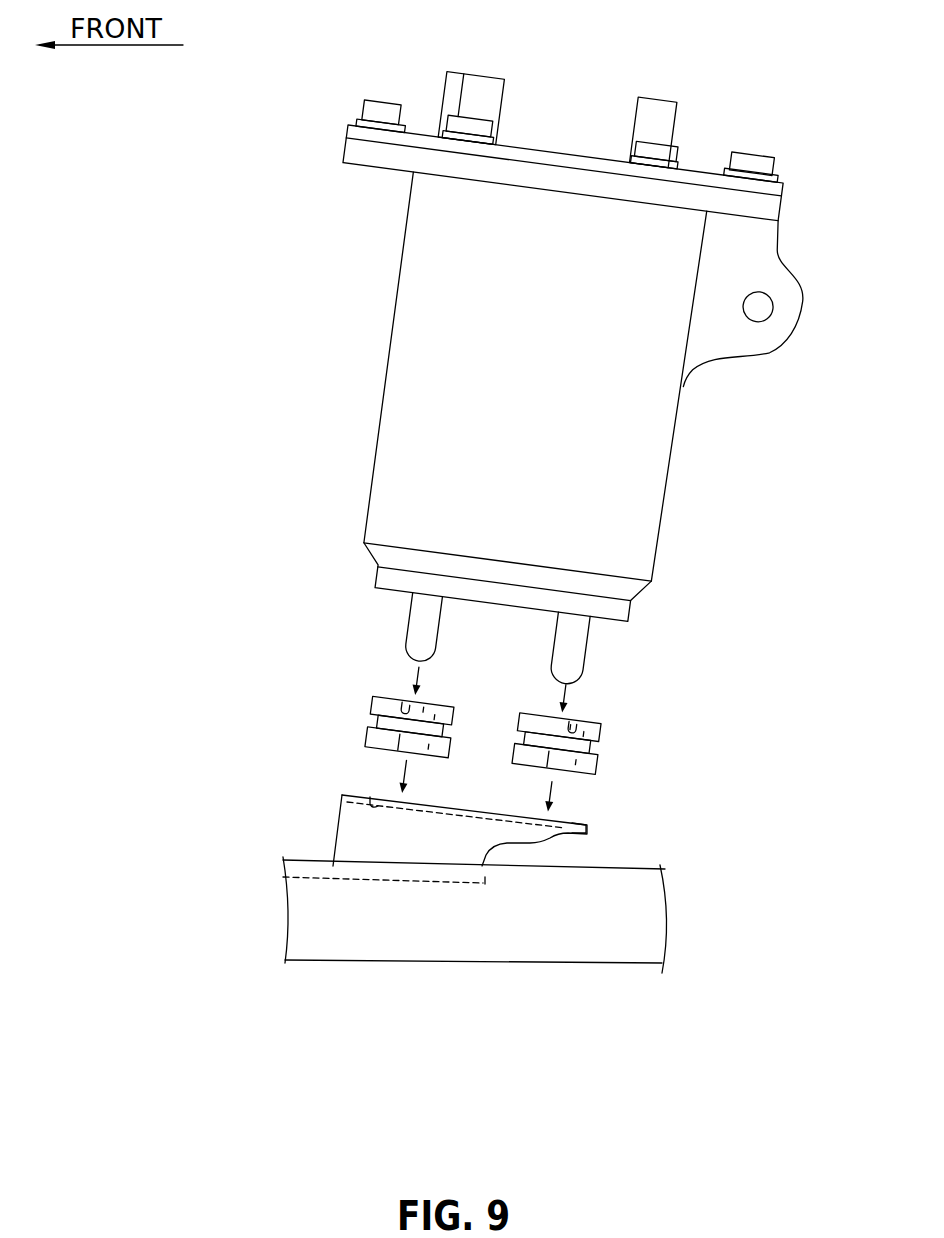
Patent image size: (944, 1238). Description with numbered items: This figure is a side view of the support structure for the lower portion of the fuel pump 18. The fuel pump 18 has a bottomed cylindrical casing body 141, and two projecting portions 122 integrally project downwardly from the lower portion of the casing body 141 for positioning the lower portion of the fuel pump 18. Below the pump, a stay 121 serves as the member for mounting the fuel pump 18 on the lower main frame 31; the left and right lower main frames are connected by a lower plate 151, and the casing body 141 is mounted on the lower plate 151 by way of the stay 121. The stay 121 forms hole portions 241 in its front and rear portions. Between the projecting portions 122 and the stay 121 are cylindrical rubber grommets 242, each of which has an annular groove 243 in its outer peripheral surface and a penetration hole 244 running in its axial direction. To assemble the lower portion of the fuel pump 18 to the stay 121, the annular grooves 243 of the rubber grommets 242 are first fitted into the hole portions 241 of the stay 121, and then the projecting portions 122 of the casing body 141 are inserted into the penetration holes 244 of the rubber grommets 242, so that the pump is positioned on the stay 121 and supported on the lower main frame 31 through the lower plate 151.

The fuel pump 18 is at (387, 325).
The casing body 141 is at (645, 437).
The projecting portions 122 is at (422, 628).
The rubber grommets 242 is at (372, 705).
The annular grooves 243 is at (372, 713).
The penetration holes 244 is at (403, 703).
The hole portions 241 is at (370, 798).
The stay 121 is at (335, 837).
The lower plate 151 is at (320, 878).
The lower main frame 31 is at (572, 952).